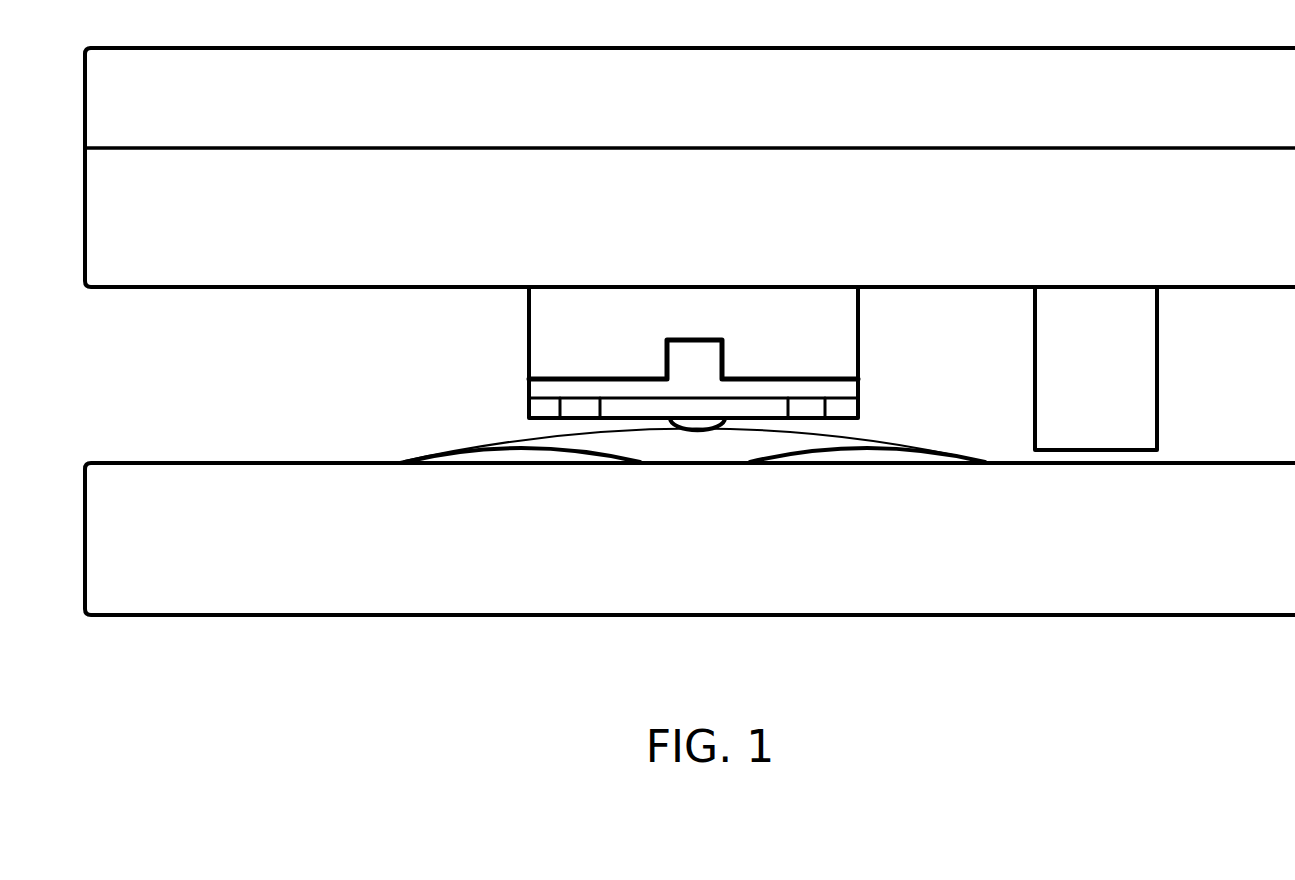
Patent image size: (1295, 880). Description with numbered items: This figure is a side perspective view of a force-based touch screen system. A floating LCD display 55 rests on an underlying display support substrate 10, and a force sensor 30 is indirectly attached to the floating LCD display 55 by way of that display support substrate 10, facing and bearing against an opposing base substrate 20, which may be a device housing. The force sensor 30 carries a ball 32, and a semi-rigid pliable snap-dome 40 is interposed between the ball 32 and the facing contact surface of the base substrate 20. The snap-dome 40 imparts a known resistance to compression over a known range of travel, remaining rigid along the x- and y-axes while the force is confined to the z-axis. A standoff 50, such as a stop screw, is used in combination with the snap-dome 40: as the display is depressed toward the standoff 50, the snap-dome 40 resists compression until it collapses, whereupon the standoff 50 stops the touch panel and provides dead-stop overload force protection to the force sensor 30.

The floating LCD display 55 is at (668, 115).
The display support substrate 10 is at (668, 243).
The base substrate 20 is at (688, 559).
The force sensor 30 is at (529, 335).
The ball 32 is at (709, 429).
The snap-dome 40 is at (490, 445).
The standoff 50 is at (1157, 362).